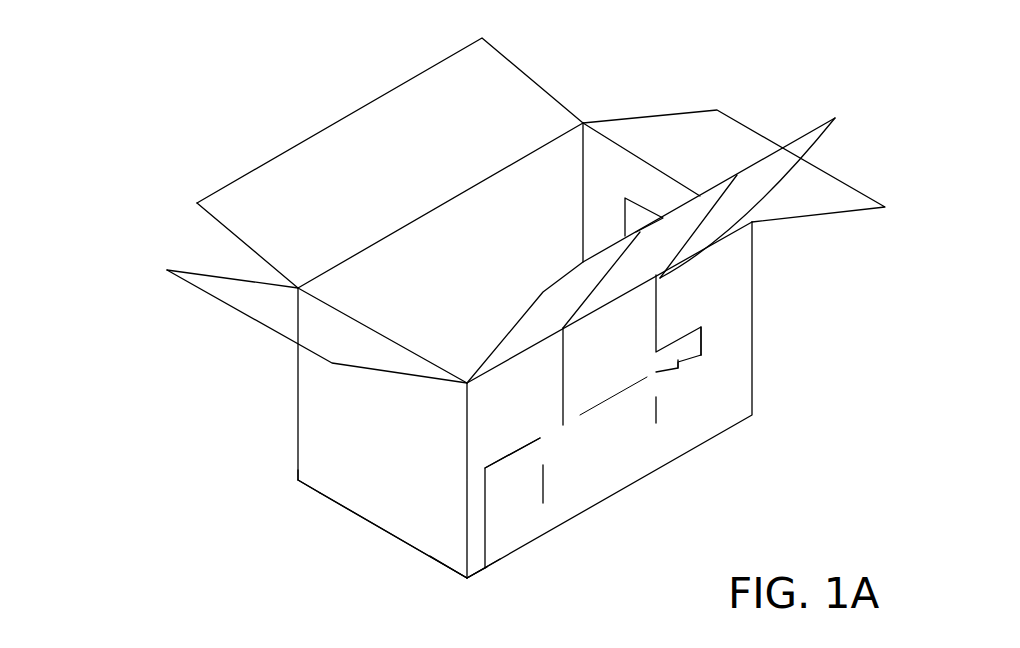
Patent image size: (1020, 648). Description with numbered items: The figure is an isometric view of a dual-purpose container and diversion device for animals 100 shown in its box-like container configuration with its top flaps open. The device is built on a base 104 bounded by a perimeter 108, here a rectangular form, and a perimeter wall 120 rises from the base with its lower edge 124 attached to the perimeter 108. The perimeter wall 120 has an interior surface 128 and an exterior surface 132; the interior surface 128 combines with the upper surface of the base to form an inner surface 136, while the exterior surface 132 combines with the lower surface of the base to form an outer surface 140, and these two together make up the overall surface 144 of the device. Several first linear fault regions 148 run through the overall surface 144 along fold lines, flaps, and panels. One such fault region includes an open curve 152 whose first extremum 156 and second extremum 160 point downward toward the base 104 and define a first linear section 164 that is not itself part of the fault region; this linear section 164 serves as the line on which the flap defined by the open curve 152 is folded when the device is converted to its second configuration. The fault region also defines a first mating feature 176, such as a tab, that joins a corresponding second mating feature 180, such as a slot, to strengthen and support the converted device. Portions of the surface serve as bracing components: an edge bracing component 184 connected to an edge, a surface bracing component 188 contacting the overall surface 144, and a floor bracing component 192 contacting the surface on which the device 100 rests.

The dual-purpose container and diversion device for animals 100 is at (114, 46).
The base 104 is at (387, 537).
The perimeter 108 is at (443, 565).
The perimeter wall 120 is at (325, 465).
The lower edge 124 is at (733, 427).
The interior surface 128 is at (432, 247).
The exterior surface 132 is at (330, 398).
The inner surface 136 is at (387, 263).
The outer surface 140 is at (360, 482).
The overall surface 144 is at (732, 247).
The first linear fault region 148 is at (383, 335).
The open curve 152 is at (700, 355).
The first extremum 156 is at (652, 373).
The second extremum 160 is at (563, 418).
The first linear section 164 is at (606, 398).
The first mating feature 176 is at (680, 365).
The second mating feature 180 is at (655, 423).
The edge bracing component 184 is at (656, 355).
The surface bracing component 188 is at (540, 438).
The floor bracing component 192 is at (477, 578).